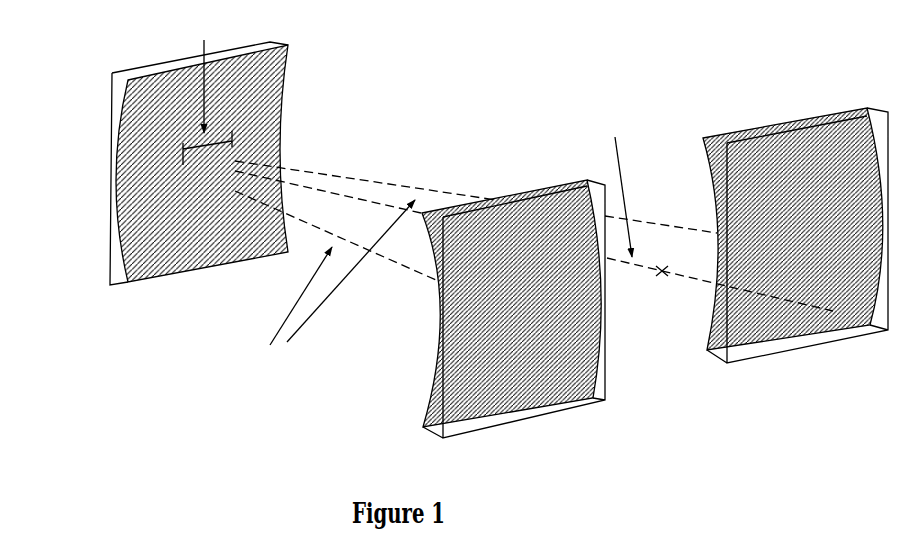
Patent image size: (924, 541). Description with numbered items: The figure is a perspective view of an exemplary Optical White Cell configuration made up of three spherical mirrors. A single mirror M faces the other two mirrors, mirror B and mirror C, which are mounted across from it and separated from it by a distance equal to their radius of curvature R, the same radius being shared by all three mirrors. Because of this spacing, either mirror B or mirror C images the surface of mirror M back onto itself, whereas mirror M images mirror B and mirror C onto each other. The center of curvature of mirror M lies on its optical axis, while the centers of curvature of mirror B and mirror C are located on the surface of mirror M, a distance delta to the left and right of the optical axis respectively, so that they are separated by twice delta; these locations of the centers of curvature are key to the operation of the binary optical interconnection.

The mirror M is at (188, 154).
The mirror C is at (513, 323).
The mirror B is at (795, 251).
The radius of curvature R is at (311, 288).
The optical axis is at (585, 178).